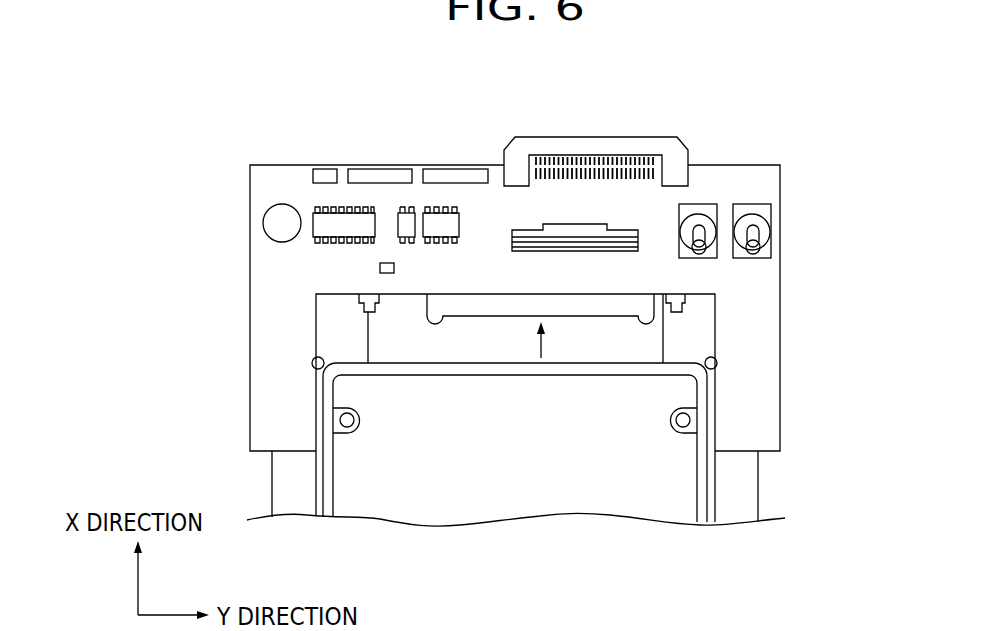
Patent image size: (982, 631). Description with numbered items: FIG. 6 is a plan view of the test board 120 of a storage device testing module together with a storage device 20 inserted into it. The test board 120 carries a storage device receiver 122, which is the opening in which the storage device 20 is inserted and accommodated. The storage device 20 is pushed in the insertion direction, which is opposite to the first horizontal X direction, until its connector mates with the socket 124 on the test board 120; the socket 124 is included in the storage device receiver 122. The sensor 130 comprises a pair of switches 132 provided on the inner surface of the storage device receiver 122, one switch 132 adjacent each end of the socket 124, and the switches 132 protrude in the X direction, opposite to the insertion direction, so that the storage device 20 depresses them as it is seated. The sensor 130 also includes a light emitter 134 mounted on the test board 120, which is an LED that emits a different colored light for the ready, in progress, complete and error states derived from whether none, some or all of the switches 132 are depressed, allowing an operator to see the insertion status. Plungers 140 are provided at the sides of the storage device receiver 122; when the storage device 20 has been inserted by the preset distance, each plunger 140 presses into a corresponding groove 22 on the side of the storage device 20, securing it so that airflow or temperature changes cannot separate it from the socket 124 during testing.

The storage device 20 is at (518, 490).
The grooves 22 is at (308, 411).
The test board 120 is at (265, 278).
The storage device receiver 122 is at (338, 327).
The socket 124 is at (473, 300).
The sensor 130 is at (347, 223).
The switches 132 is at (672, 312).
The light emitter 134 is at (263, 219).
The plungers 140 is at (717, 362).